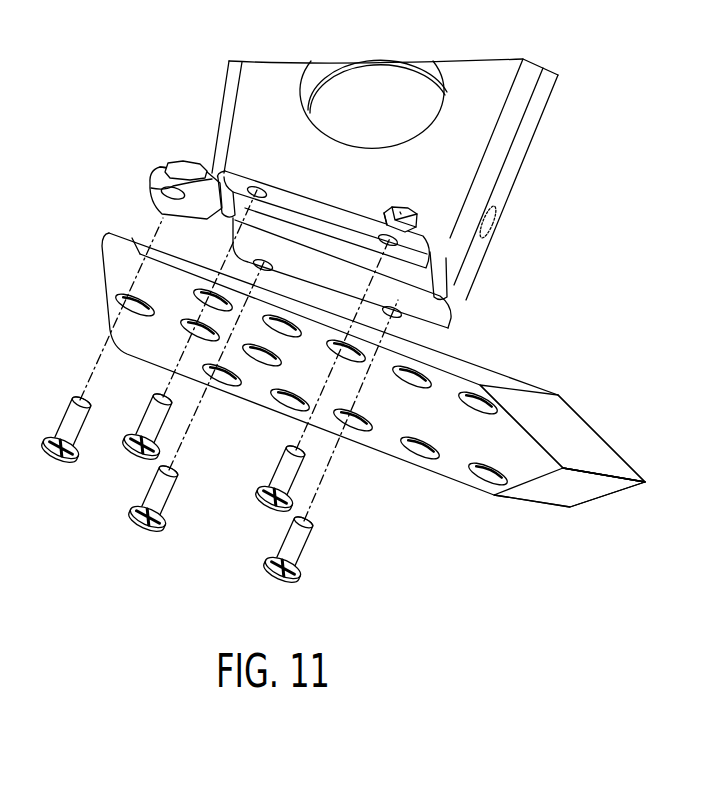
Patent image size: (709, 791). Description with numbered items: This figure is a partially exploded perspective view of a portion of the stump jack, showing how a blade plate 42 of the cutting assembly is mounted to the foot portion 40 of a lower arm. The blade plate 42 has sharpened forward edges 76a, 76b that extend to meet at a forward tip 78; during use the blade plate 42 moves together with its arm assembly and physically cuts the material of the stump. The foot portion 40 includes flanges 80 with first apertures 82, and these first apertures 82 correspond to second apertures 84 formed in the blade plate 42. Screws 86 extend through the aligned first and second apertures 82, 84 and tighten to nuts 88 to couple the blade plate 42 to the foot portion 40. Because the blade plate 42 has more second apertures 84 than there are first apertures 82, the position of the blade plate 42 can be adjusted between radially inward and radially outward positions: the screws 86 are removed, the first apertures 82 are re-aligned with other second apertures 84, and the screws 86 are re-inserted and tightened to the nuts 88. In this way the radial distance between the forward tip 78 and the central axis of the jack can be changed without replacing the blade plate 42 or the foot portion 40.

The foot portion 40 is at (507, 172).
The blade plate 42 is at (132, 342).
The sharpened forward edge 76a is at (593, 437).
The sharpened forward edge 76b is at (607, 498).
The forward tip 78 is at (645, 478).
The flanges 80 is at (152, 190).
The first apertures 82 is at (163, 194).
The second apertures 84 is at (123, 313).
The screws 86 is at (160, 493).
The nuts 88 is at (400, 212).